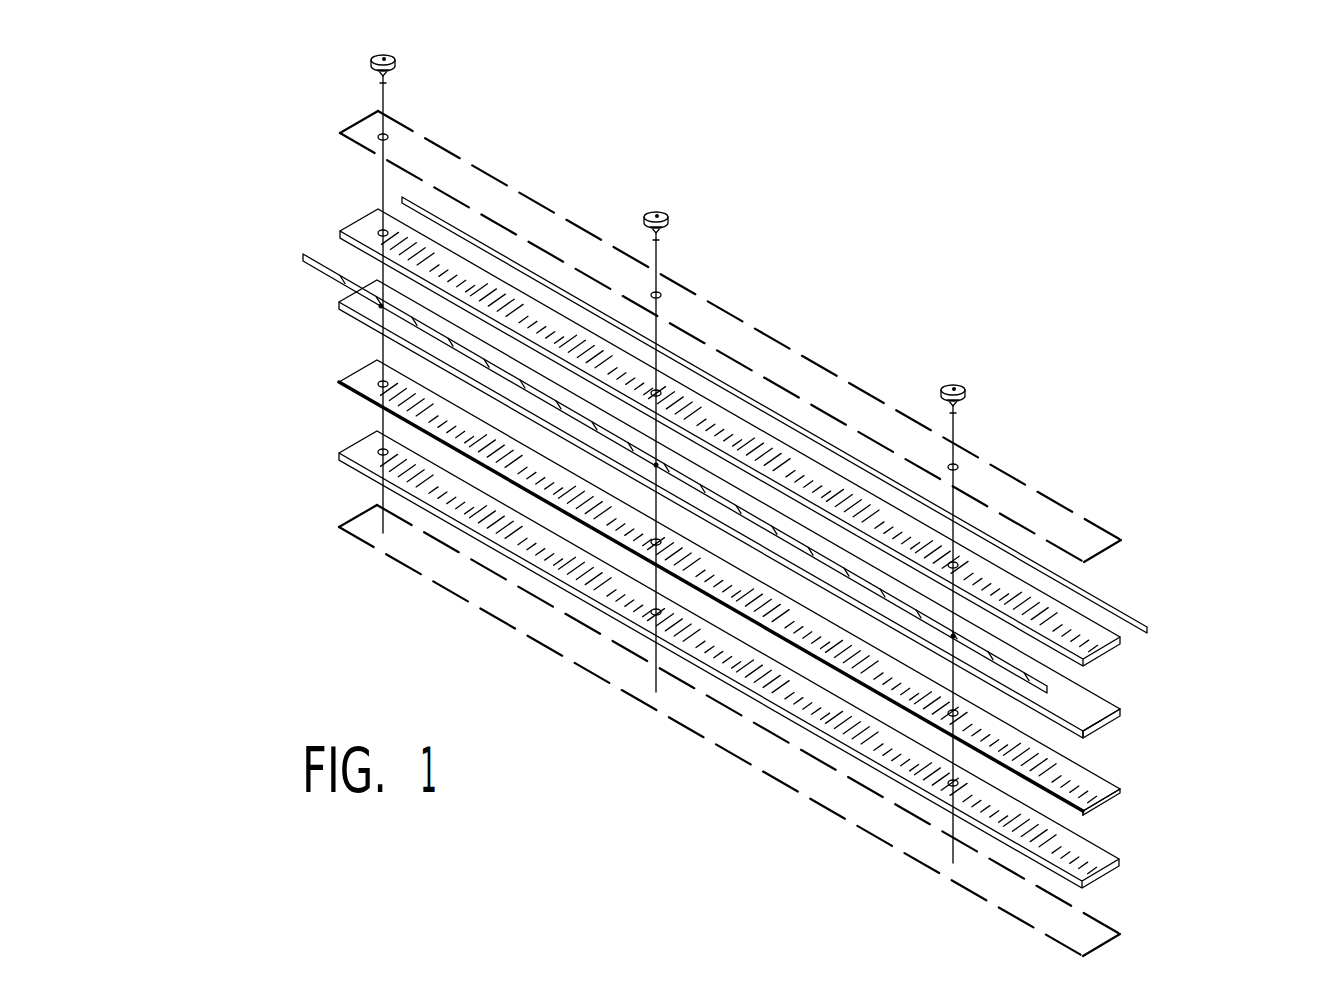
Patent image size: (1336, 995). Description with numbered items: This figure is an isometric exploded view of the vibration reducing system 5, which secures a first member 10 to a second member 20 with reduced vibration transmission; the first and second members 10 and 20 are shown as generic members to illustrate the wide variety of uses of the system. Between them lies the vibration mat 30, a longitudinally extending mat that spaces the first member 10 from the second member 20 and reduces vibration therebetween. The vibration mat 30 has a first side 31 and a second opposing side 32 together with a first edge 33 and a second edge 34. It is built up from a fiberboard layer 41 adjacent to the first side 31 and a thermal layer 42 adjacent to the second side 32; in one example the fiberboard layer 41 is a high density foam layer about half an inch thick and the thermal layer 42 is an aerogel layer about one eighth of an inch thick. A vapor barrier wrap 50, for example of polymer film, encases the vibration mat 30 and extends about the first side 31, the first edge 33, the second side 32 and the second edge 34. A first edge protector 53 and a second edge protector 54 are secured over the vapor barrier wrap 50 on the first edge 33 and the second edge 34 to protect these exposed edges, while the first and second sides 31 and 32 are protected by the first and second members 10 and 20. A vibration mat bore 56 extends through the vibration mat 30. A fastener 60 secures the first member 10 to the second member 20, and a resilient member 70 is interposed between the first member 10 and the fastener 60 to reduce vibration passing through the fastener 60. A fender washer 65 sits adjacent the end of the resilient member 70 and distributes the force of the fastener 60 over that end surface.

The vibration reducing system 5 is at (1252, 642).
The first member 10 is at (339, 133).
The second member 20 is at (339, 527).
The vibration mat 30 is at (240, 279).
The first side 31 is at (1095, 716).
The second opposing side 32 is at (1084, 812).
The first edge 33 is at (1067, 731).
The second edge 34 is at (1113, 706).
The fiberboard layer 41 is at (339, 308).
The thermal layer 42 is at (339, 382).
The vapor barrier wrap 50 is at (340, 231).
The first edge protector 53 is at (1047, 688).
The second edge protector 54 is at (1150, 628).
The vibration mat bore 56 is at (378, 231).
The fastener 60 is at (385, 83).
The fender washer 65 is at (394, 59).
The resilient member 70 is at (372, 67).